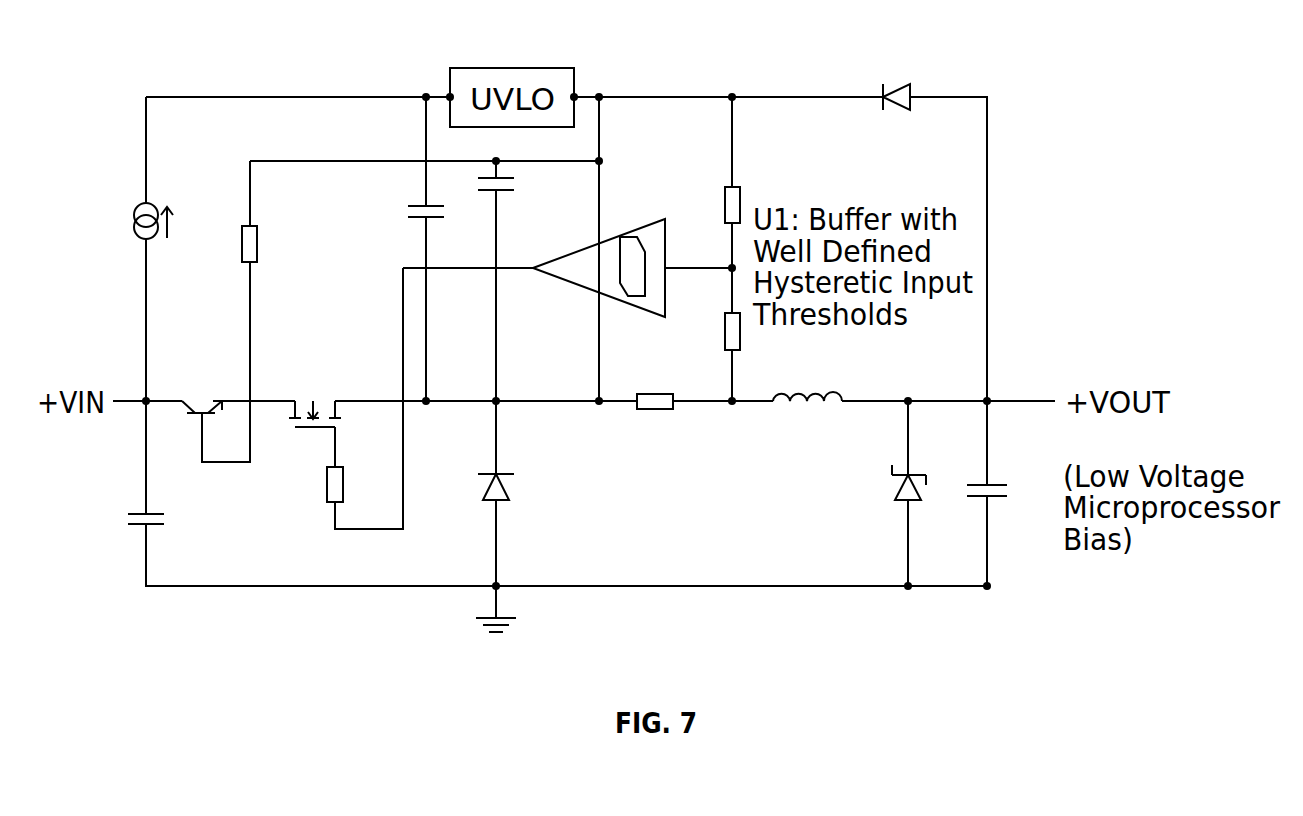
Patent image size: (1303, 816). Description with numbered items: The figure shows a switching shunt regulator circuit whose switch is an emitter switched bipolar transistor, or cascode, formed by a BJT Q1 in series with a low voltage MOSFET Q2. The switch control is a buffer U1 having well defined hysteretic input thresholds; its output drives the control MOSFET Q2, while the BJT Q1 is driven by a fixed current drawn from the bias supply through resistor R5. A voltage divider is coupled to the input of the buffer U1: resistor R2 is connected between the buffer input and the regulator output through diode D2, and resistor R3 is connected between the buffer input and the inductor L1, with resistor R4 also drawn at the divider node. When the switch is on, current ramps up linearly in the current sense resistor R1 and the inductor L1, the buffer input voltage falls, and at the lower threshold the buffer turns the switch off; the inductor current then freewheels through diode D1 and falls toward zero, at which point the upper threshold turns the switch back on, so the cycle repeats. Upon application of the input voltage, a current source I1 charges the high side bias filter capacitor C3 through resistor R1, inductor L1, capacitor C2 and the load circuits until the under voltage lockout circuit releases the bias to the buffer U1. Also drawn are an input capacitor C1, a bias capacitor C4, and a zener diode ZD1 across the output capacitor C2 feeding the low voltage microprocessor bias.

The current source I1 is at (140, 206).
The resistor R5 is at (272, 245).
The high side bias filter capacitor C3 is at (403, 214).
The capacitor C4 is at (519, 184).
The buffer U1 is at (599, 254).
The resistor R2 is at (710, 206).
The resistor R4 is at (710, 331).
The diode D2 is at (898, 118).
The BJT Q1 is at (203, 386).
The low voltage MOSFET Q2 is at (299, 434).
The resistor R3 is at (357, 484).
The input capacitor C1 is at (168, 519).
The diode D1 is at (474, 487).
The current sense resistor R1 is at (656, 421).
The inductor L1 is at (807, 418).
The zener diode ZD1 is at (878, 485).
The capacitor C2 is at (1008, 489).